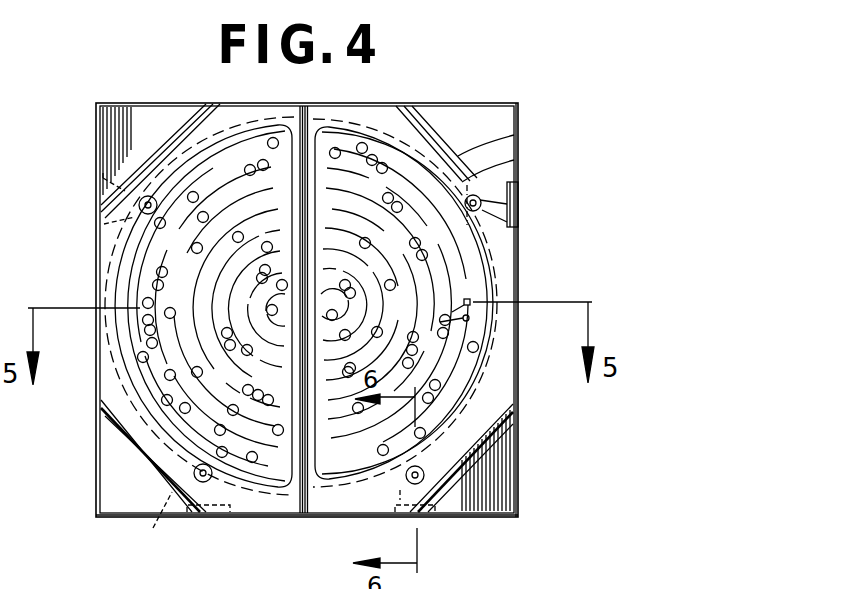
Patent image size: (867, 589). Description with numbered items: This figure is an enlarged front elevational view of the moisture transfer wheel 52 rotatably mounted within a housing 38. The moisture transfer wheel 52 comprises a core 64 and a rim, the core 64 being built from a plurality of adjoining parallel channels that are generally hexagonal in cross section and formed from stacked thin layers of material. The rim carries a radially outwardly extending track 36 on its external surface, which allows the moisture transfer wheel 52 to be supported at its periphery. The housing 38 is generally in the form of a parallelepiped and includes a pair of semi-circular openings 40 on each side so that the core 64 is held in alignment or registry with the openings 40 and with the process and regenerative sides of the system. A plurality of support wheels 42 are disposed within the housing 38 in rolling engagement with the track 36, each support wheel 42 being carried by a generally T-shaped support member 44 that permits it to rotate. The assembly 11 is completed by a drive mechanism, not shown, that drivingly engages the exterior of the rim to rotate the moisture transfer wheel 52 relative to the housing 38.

The bag holder assembly 11 is at (560, 120).
The track 36 is at (712, 578).
The housing 38 is at (493, 117).
The semi-circular openings 40 is at (140, 258).
The support wheels 42 is at (140, 198).
The support member 44 is at (495, 204).
The moisture transfer wheel 52 is at (455, 272).
The core 64 is at (473, 297).